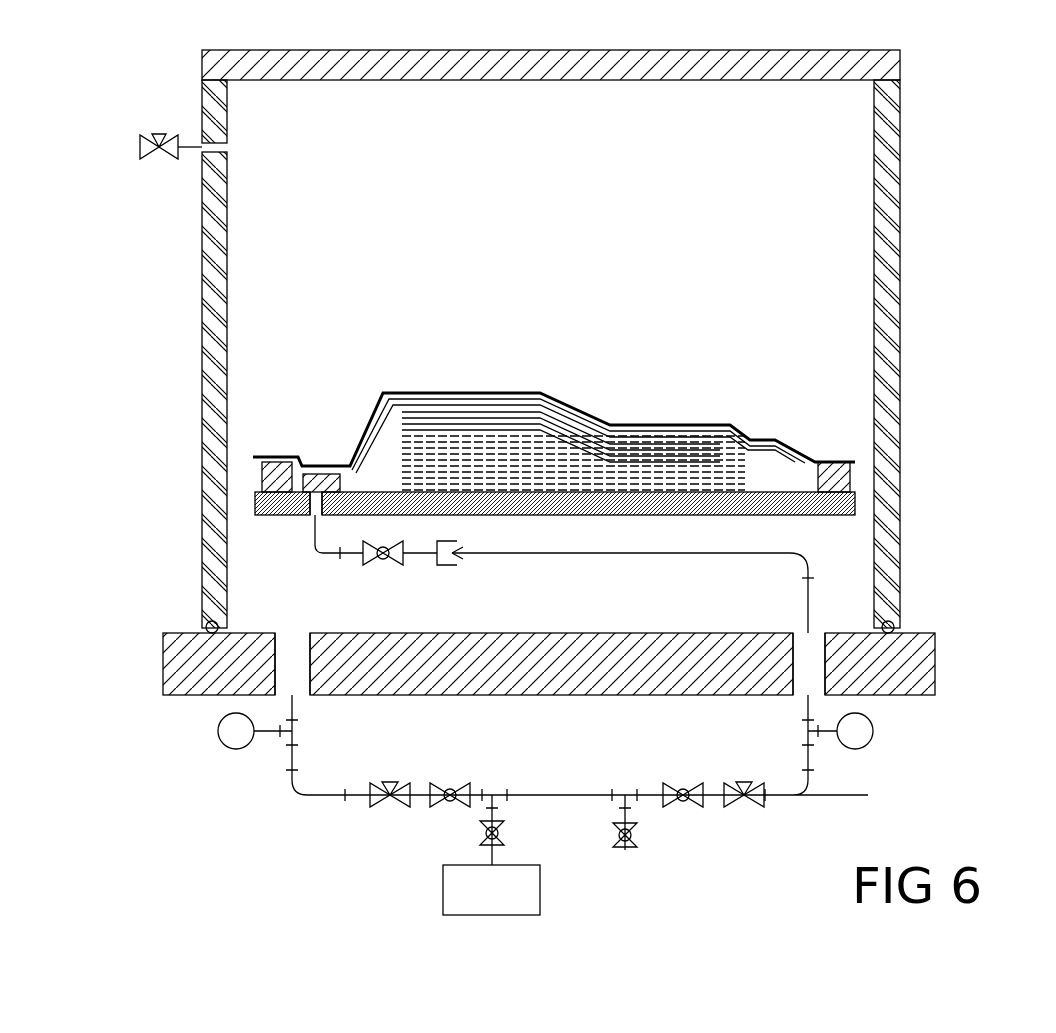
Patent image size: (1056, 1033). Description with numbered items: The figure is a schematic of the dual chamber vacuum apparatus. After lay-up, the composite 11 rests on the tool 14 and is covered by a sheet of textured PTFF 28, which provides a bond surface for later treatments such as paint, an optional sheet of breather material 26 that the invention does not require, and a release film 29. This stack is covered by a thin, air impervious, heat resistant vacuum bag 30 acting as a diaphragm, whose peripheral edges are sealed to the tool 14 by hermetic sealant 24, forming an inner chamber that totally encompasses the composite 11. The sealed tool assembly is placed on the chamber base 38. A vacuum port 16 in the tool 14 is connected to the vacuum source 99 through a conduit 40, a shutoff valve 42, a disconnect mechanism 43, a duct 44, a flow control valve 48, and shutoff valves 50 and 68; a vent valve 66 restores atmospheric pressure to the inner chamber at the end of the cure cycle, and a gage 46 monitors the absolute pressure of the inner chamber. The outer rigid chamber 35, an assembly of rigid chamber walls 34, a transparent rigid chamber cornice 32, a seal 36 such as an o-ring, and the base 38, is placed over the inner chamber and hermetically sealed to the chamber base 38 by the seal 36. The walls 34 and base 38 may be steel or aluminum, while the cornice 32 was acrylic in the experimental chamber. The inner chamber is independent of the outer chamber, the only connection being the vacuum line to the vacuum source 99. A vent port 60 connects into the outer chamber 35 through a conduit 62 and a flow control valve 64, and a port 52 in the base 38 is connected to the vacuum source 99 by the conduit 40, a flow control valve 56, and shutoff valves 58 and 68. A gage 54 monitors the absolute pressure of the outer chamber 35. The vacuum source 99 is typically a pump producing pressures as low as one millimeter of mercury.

The composite 11 is at (398, 462).
The tool 14 is at (840, 508).
The vacuum port 16 is at (314, 516).
The hermetic sealant 24 is at (268, 470).
The breather material 26 is at (325, 472).
The textured PTFF sheet 28 is at (420, 410).
The release film 29 is at (440, 400).
The vacuum bag 30 is at (445, 392).
The transparent rigid chamber cornice 32 is at (848, 64).
The rigid chamber walls 34 is at (893, 150).
The outer rigid chamber 35 is at (898, 90).
The seal 36 is at (206, 625).
The chamber base 38 is at (935, 655).
The conduit 40 is at (300, 797).
The shutoff valve 42 is at (362, 553).
The disconnect mechanism 43 is at (447, 565).
The duct 44 is at (822, 698).
The gage 46 is at (866, 740).
The flow control valve 48 is at (745, 808).
The shutoff valve 50 is at (683, 808).
The port 52 is at (280, 690).
The gage 54 is at (228, 740).
The flow control valve 56 is at (388, 808).
The shutoff valve 58 is at (445, 806).
The vent port 60 is at (200, 145).
The conduit 62 is at (195, 150).
The flow control valve 64 is at (140, 147).
The vent valve 66 is at (631, 847).
The shutoff valve 68 is at (503, 826).
The vacuum source 99 is at (543, 905).